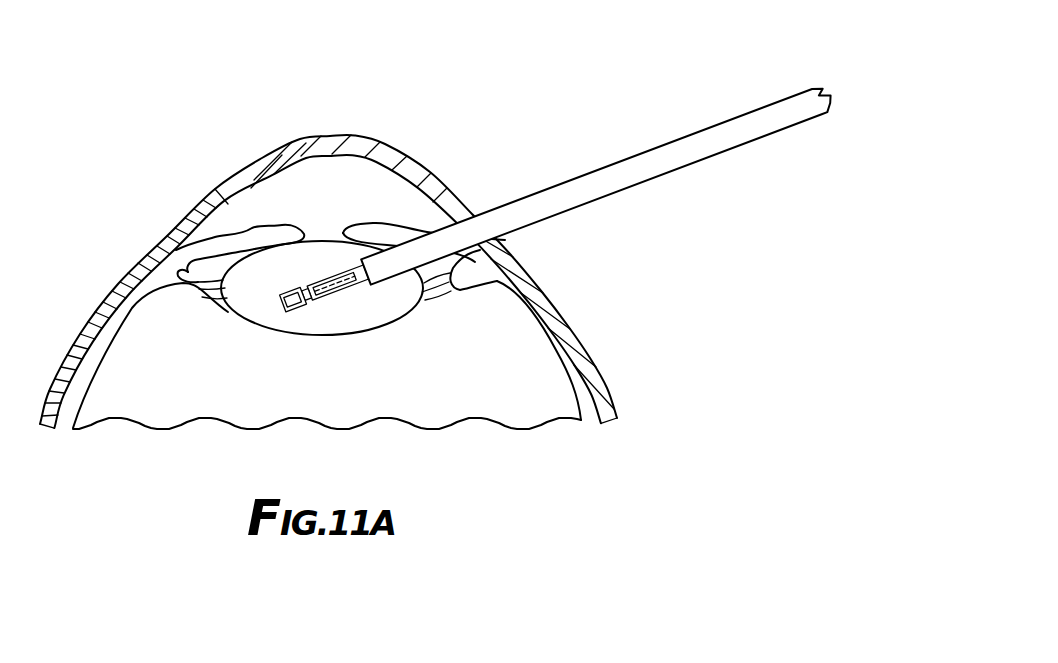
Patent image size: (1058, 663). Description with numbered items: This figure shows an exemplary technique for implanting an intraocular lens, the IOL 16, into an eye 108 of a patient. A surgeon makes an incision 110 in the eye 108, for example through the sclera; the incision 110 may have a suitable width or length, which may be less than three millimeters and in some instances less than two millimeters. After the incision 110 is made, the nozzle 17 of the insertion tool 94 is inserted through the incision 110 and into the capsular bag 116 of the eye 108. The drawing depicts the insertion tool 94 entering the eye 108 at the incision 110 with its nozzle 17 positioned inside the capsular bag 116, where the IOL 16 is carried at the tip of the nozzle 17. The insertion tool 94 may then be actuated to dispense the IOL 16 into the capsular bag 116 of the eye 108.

The eye 108 is at (215, 148).
The incision 110 is at (505, 240).
The capsular bag 116 is at (331, 340).
The insertion tool 94 is at (690, 130).
The nozzle 17 is at (377, 300).
The IOL 16 is at (313, 286).